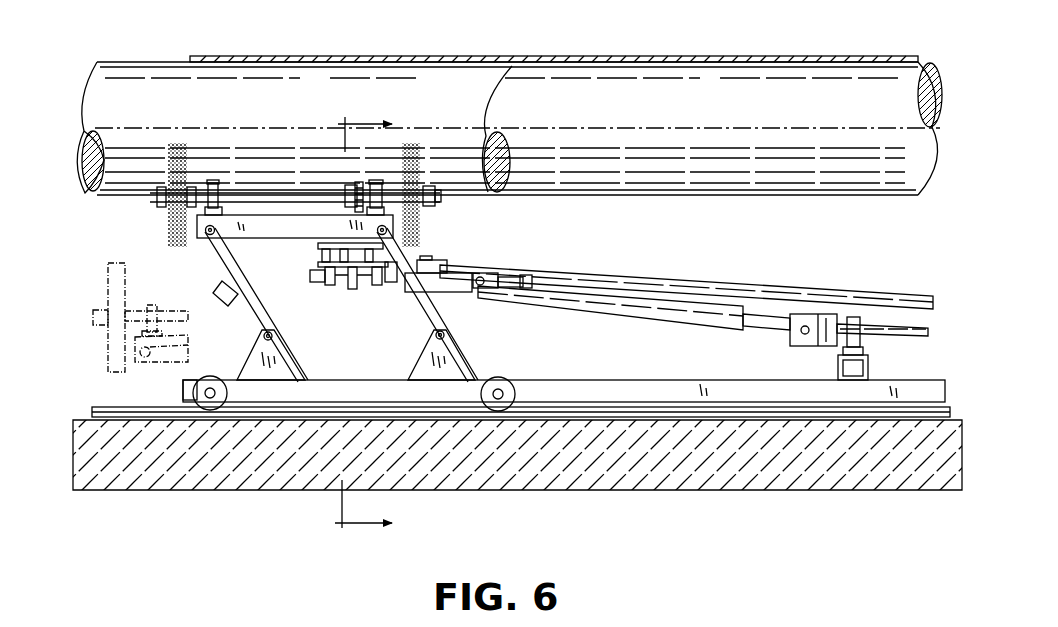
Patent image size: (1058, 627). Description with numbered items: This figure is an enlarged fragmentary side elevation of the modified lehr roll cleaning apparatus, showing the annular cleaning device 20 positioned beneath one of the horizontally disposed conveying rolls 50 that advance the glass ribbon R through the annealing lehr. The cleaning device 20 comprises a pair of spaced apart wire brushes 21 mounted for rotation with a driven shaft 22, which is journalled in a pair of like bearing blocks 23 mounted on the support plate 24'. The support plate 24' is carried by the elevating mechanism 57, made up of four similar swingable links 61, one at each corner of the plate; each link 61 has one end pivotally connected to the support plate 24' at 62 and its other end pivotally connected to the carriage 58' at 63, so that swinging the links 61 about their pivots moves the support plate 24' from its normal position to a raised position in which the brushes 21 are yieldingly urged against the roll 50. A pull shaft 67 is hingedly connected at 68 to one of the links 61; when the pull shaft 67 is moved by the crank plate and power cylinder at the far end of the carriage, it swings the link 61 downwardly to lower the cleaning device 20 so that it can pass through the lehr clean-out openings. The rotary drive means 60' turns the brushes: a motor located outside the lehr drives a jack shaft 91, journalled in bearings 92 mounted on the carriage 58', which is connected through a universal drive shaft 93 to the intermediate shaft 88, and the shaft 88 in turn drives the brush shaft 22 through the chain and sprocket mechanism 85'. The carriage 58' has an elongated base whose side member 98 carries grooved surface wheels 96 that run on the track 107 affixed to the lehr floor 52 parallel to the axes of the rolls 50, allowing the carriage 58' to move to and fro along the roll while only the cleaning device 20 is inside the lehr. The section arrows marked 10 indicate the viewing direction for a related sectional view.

The glass ribbon R is at (485, 60).
The conveying roll 50 is at (512, 80).
The annular cleaning device 20 is at (431, 154).
The wire brushes 21 is at (177, 142).
The driven shaft 22 is at (254, 192).
The bearing blocks 23 is at (213, 182).
The support plate 24' is at (295, 191).
The pivotal connection 62 is at (205, 236).
The swingable links 61 is at (255, 300).
The pivotal connection 63 is at (272, 338).
The intermediate shaft 88 is at (322, 281).
The chain and sprocket mechanism 85' is at (342, 336).
The elevating mechanism 57 is at (452, 313).
The hinged connection 68 is at (481, 276).
The universal drive shaft 93 is at (682, 318).
The pull shaft 67 is at (722, 290).
The rotary drive means 60' is at (582, 352).
The jack shaft 91 is at (900, 330).
The bearings 92 is at (855, 317).
The carriage 58' is at (564, 363).
The side member 98 is at (730, 385).
The grooved surface wheels 96 is at (200, 390).
The track 107 is at (950, 416).
The lehr floor 52 is at (80, 412).
The section line 10 is at (348, 326).